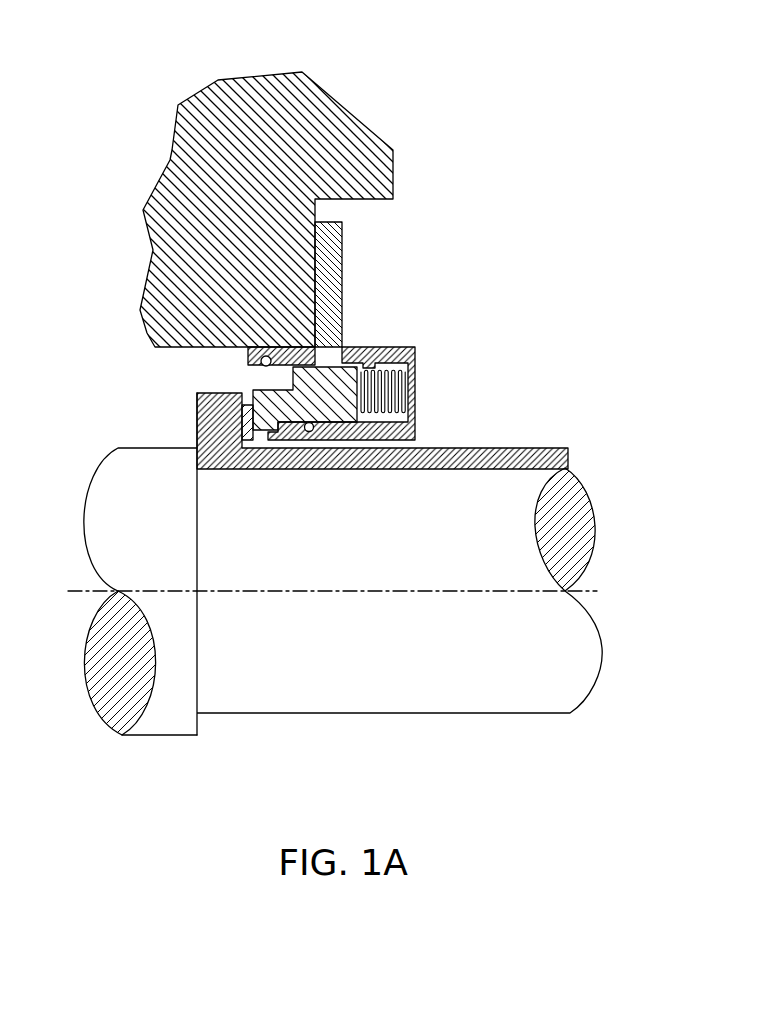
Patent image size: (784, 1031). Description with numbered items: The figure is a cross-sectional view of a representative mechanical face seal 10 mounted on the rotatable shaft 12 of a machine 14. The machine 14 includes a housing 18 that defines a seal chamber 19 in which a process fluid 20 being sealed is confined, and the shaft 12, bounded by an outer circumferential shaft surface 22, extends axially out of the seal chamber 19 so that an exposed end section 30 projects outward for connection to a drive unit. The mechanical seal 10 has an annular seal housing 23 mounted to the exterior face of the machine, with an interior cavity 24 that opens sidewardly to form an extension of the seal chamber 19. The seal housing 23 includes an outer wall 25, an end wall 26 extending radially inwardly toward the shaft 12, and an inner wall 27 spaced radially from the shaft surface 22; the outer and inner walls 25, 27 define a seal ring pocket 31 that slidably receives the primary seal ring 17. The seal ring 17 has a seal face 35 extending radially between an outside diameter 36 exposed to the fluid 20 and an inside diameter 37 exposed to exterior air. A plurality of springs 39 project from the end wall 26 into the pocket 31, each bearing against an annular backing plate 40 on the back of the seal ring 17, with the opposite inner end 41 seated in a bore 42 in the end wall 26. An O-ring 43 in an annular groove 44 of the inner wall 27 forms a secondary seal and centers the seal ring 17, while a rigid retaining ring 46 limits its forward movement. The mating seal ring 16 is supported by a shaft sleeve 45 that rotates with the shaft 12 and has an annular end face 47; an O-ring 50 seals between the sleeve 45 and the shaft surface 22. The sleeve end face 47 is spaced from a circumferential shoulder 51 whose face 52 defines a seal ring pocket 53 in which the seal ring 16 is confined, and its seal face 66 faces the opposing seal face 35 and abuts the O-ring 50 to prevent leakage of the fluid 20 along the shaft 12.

The mechanical face seal 10 is at (562, 262).
The rotatable shaft 12 is at (417, 727).
The machine 14 is at (100, 110).
The seal ring 16 is at (195, 417).
The seal ring 17 is at (300, 372).
The housing 18 is at (243, 88).
The seal chamber 19 is at (112, 370).
The process fluid 20 is at (179, 384).
The outer circumferential shaft surface 22 is at (267, 688).
The seal housing 23 is at (340, 232).
The interior cavity 24 is at (254, 373).
The outer wall 25 is at (370, 350).
The end wall 26 is at (410, 400).
The inner wall 27 is at (352, 432).
The exposed end section 30 is at (578, 740).
The seal ring pocket 31 is at (335, 372).
The seal face 35 is at (205, 455).
The outside seal ring diameter 36 is at (245, 392).
The inside seal ring diameter 37 is at (247, 440).
The springs 39 is at (397, 360).
The annular backing plate 40 is at (383, 357).
The inner end 41 is at (408, 380).
The bore 42 is at (415, 423).
The O-ring 43 is at (310, 432).
The annular groove 44 is at (326, 430).
The shaft sleeve 45 is at (568, 462).
The retaining ring 46 is at (262, 356).
The annular end face 47 is at (220, 440).
The O-ring 50 is at (243, 450).
The circumferential shoulder 51 is at (177, 725).
The face 52 is at (198, 723).
The seal ring pocket 53 is at (211, 478).
The seal face 66 is at (210, 423).